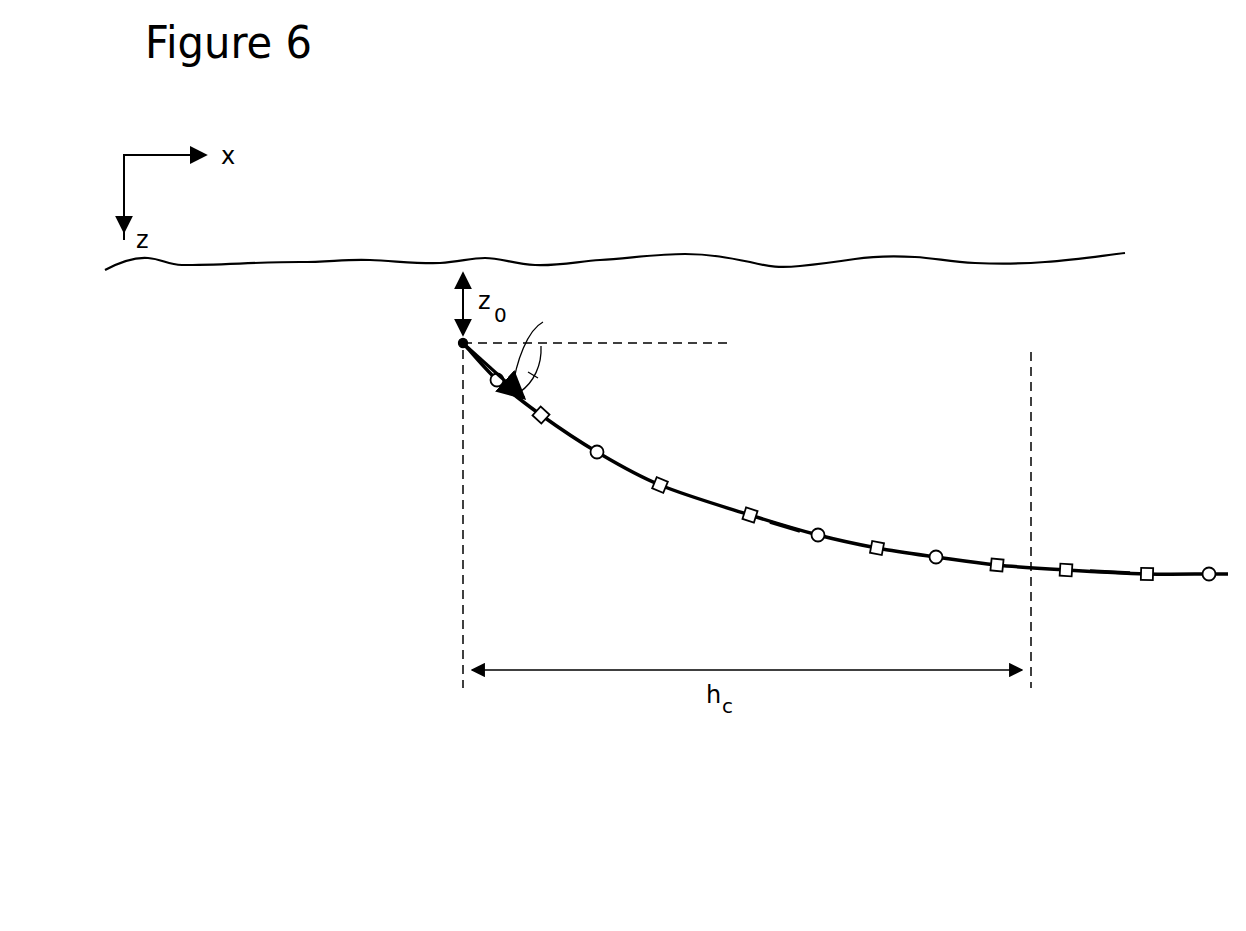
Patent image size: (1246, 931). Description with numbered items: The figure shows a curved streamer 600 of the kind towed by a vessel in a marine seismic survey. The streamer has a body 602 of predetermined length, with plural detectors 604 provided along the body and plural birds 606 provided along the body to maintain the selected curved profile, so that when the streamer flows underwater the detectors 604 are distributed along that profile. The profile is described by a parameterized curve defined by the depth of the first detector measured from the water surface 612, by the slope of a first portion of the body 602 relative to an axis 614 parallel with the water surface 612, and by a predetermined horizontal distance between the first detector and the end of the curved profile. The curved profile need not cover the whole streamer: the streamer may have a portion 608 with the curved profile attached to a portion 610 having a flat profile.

The curved streamer 600 is at (844, 480).
The body 602 is at (700, 492).
The detectors 604 is at (603, 448).
The birds 606 is at (550, 412).
The portion having the curved profile 608 is at (786, 527).
The portion having a flat profile 610 is at (1106, 570).
The water surface 612 is at (682, 256).
The axis 614 is at (668, 343).